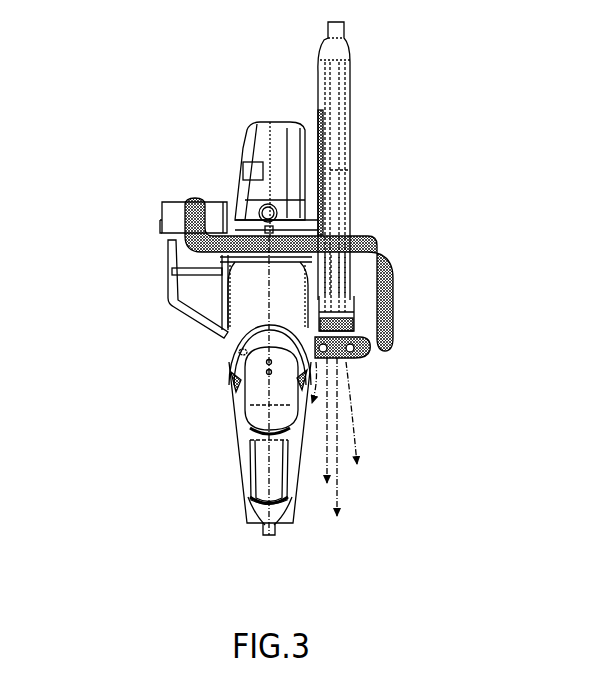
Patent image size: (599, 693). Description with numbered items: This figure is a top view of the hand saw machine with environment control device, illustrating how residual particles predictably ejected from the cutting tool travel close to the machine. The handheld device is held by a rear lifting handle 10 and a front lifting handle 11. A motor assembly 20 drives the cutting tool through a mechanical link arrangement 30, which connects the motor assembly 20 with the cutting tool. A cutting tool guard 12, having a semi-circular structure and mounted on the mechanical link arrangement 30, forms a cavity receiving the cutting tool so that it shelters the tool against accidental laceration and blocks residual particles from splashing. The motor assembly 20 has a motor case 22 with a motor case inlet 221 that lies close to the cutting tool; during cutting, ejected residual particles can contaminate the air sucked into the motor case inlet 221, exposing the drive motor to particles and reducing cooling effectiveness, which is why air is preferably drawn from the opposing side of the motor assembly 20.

The rear lifting handle 10 is at (258, 460).
The front lifting handle 11 is at (367, 252).
The cutting tool guard 12 is at (352, 72).
The motor assembly 20 is at (140, 364).
The motor case 22 is at (232, 365).
The motor case inlet 221 is at (228, 380).
The mechanical link arrangement 30 is at (258, 148).